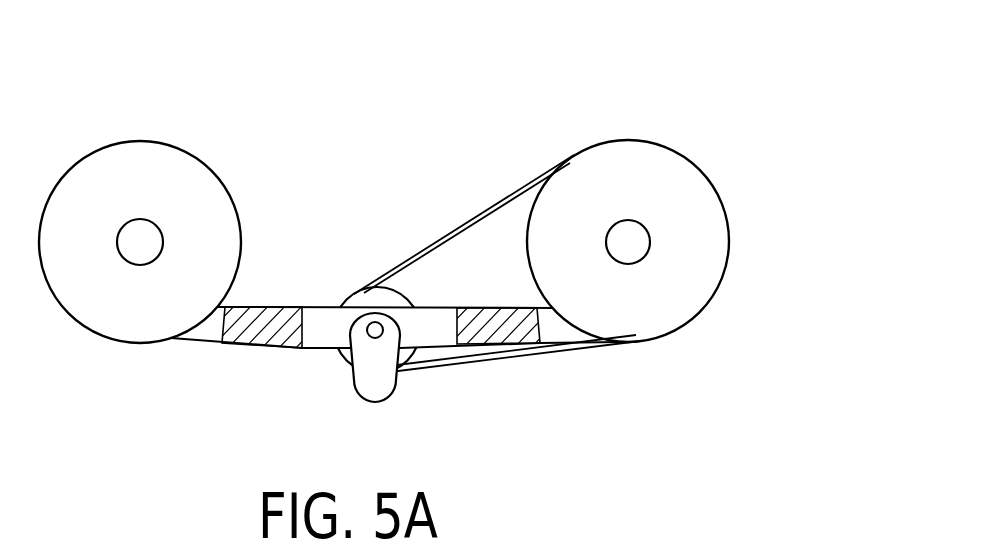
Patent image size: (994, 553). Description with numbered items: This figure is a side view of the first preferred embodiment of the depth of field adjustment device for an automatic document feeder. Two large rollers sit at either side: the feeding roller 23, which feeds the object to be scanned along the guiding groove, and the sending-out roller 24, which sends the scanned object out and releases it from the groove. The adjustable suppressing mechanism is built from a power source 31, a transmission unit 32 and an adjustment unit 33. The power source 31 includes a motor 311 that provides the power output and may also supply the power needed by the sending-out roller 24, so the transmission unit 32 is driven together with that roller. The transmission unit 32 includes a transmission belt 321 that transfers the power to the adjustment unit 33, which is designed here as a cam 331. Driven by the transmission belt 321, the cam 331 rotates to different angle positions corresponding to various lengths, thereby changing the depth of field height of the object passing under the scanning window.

The feeding roller 23 is at (133, 163).
The sending-out roller 24 is at (615, 162).
The power source 31 is at (740, 319).
The motor 311 is at (642, 237).
The transmission unit 32 is at (360, 232).
The transmission belt 321 is at (453, 225).
The adjustment unit 33 is at (398, 387).
The cam 331 is at (362, 373).